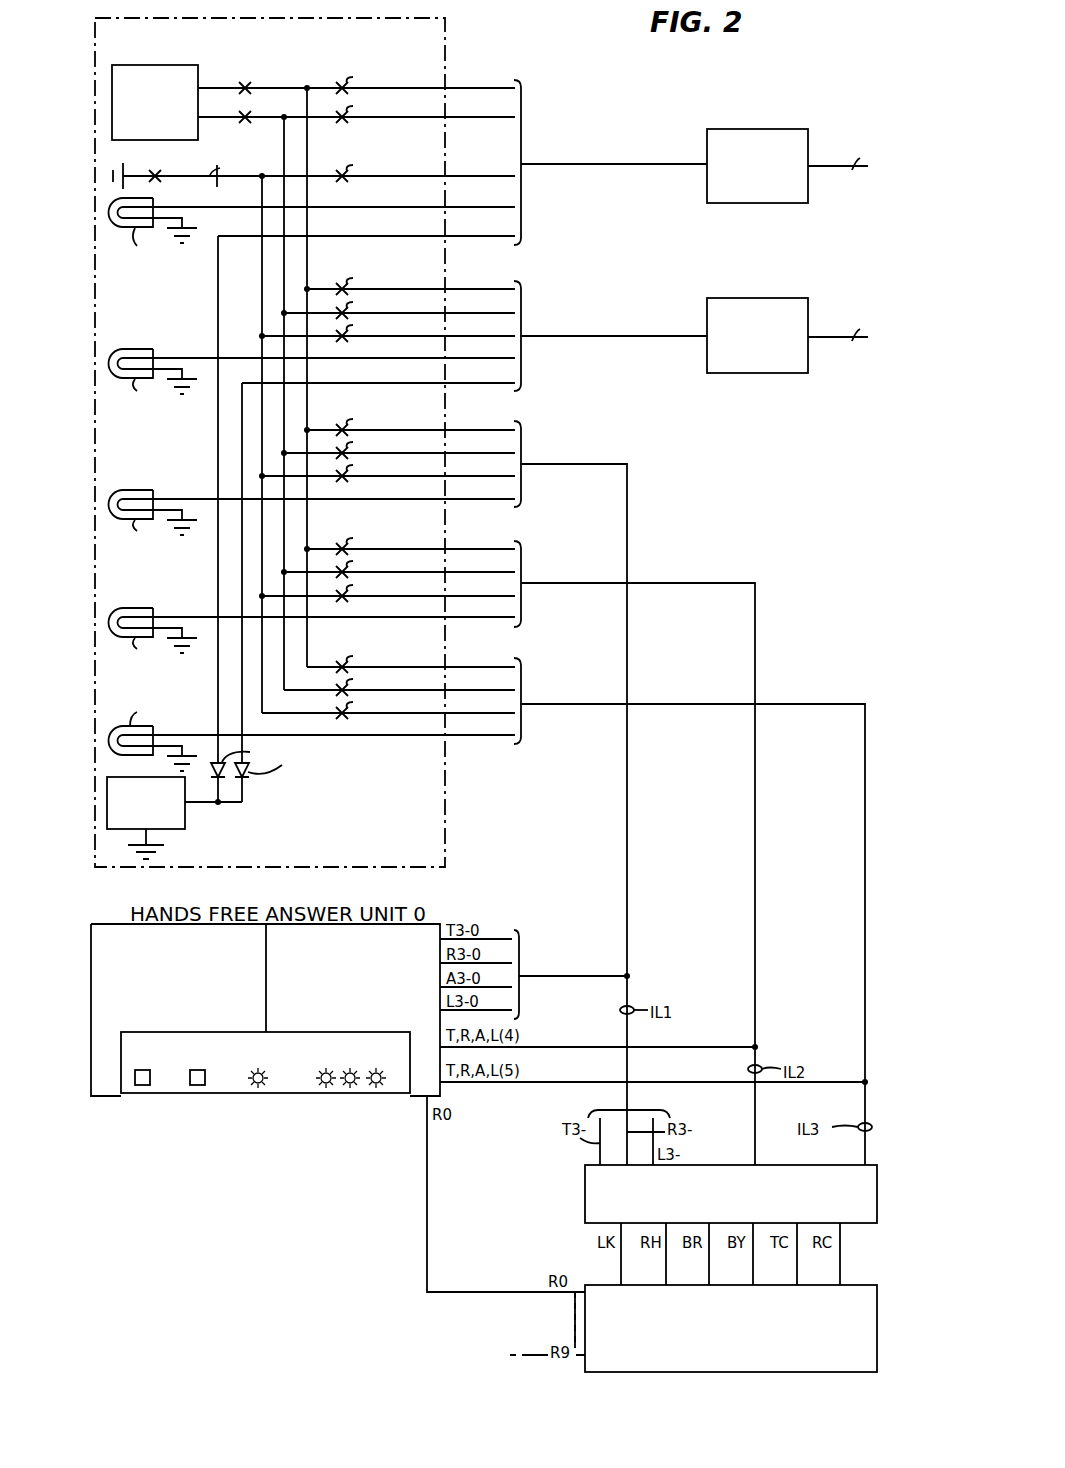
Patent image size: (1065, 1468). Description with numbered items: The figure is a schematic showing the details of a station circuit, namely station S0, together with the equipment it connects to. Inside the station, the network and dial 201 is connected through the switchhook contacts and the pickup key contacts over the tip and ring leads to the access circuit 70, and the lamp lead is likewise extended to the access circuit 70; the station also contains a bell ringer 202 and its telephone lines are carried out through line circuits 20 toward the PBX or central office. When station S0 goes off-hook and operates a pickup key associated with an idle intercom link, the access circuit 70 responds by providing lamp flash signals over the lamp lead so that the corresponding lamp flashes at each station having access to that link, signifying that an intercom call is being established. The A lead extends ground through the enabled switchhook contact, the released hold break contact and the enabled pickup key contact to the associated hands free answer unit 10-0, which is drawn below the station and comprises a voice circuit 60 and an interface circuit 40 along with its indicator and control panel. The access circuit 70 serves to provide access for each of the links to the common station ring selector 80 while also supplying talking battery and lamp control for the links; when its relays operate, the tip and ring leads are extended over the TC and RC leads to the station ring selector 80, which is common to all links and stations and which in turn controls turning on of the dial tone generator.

The station S0 is at (445, 34).
The network and dial 201 is at (150, 65).
The bell ringer 202 is at (185, 825).
The line circuit 20 is at (772, 129).
The voice circuit 60 is at (106, 1090).
The interface circuit 40 is at (420, 1096).
The hands free answer unit 10-0 is at (283, 1096).
The access circuit 70 is at (585, 1166).
The station ring selector 80 is at (871, 1283).